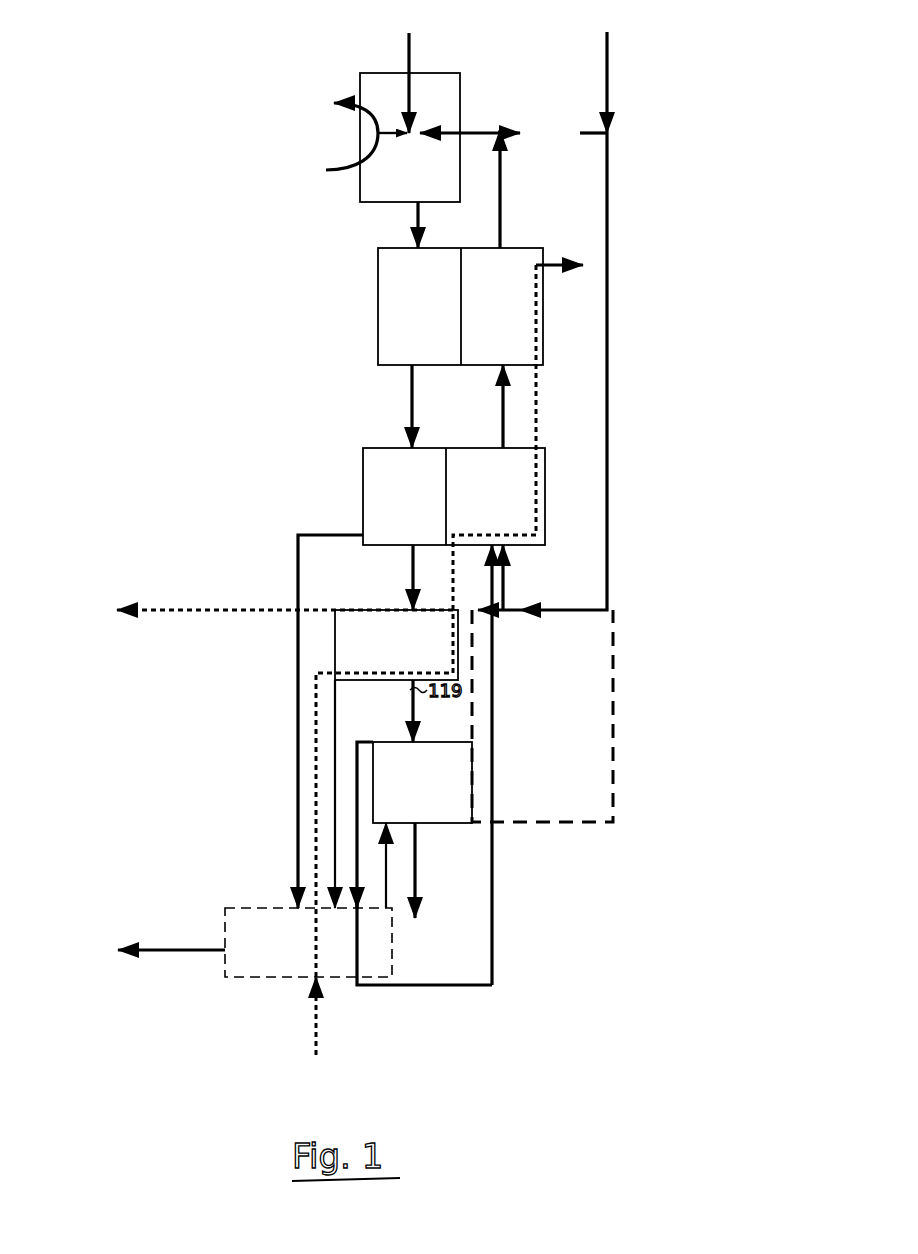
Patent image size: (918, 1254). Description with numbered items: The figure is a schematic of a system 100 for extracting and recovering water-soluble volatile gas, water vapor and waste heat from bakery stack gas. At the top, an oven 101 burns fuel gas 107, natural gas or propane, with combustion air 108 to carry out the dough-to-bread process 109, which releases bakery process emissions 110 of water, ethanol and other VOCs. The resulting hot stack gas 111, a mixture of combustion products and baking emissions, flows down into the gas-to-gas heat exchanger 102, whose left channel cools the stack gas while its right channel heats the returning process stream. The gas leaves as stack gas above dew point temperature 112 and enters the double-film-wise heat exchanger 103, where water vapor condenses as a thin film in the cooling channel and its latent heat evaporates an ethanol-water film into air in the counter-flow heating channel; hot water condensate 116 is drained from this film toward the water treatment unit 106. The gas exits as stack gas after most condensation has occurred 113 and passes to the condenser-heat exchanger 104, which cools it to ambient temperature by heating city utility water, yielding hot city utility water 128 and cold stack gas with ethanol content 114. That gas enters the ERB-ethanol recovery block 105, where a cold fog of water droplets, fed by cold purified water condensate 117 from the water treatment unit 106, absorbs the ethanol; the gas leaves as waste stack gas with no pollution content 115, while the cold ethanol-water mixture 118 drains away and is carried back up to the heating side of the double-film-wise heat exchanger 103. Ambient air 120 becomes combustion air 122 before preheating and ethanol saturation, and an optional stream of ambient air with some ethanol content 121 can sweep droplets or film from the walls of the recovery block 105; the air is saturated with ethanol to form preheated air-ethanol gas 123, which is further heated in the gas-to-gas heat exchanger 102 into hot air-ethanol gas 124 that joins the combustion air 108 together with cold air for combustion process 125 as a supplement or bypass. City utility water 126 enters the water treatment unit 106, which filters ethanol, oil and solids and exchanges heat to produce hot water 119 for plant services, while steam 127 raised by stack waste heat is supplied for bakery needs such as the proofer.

The process system 100 is at (146, 253).
The oven 101 is at (410, 137).
The gas-to-gas heat exchanger 102 is at (460, 291).
The double-film-wise heat exchanger 103 is at (454, 496).
The condenser-heat exchanger 104 is at (396, 759).
The ERB-ethanol recovery block 105 is at (422, 782).
The water treatment unit 106 is at (308, 942).
The fuel gas 107 is at (399, 70).
The combustion air 108 is at (470, 132).
The dough-to-bread process 109 is at (329, 144).
The bakery process emissions 110 is at (396, 143).
The hot stack gas 111 is at (393, 225).
The stack gas above dew point temperature 112 is at (391, 406).
The stack gas after most condensation has occurred 113 is at (393, 577).
The cold stack gas with ethanol content 114 is at (410, 707).
The waste stack gas with no pollution content 115 is at (420, 848).
The hot water condensate 116 is at (330, 710).
The cold purified water condensate 117 is at (388, 888).
The cold ethanol-water mixture 118 is at (474, 987).
The hot water 119 is at (160, 953).
The ambient air 120 is at (610, 57).
The ambient air with some ethanol content 121 is at (478, 726).
The combustion air before preheating and ethanol saturation 122 is at (508, 604).
The preheated air-ethanol gas 123 is at (505, 416).
The hot air-ethanol gas 124 is at (505, 183).
The cold air for combustion process 125 is at (568, 133).
The city utility water 126 is at (320, 1045).
The steam 127 is at (548, 270).
The hot city utility water 128 is at (176, 624).